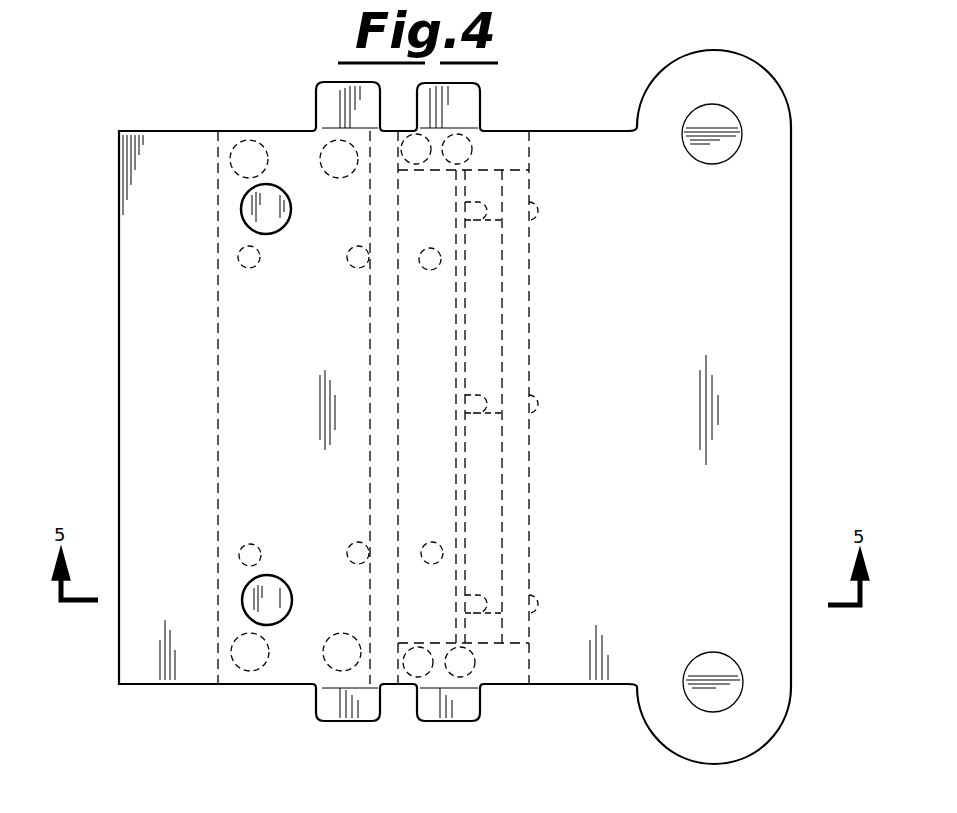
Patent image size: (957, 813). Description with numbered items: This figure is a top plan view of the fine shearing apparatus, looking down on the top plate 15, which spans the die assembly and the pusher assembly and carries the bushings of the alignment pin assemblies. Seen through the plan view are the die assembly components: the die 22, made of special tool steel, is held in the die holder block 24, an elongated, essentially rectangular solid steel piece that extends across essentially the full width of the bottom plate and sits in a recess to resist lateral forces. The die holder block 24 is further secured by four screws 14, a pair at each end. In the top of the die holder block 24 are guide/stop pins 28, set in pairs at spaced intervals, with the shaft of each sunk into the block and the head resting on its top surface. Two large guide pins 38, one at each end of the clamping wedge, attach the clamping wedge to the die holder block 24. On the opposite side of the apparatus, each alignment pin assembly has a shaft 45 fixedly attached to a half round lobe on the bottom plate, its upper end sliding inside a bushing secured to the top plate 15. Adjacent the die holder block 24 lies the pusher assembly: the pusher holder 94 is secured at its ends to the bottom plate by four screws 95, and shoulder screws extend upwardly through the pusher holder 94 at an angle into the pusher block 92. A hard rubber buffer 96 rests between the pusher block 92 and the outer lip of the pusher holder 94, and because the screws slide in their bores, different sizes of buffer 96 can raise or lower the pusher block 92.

The screws 14 is at (325, 152).
The top plate 15 is at (592, 416).
The die 22 is at (370, 370).
The die holder block 24 is at (216, 388).
The guide/stop pins 28 is at (352, 266).
The guide pins 38 is at (243, 208).
The shaft 45 is at (740, 126).
The pusher block 92 is at (445, 448).
The pusher holder 94 is at (518, 288).
The screws 95 is at (468, 137).
The buffer 96 is at (483, 246).